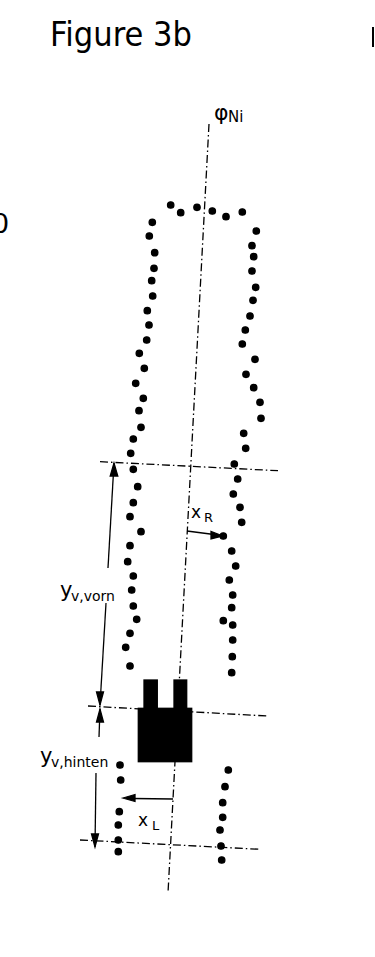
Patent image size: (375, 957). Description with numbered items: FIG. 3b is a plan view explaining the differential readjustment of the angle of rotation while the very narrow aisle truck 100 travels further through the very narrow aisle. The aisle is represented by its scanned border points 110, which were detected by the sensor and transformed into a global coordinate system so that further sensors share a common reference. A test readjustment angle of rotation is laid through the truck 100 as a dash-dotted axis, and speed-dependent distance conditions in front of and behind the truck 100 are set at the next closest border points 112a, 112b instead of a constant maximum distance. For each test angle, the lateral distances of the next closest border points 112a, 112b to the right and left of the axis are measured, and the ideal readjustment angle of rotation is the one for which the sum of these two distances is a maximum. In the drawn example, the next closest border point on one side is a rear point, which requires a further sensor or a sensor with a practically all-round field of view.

The very narrow aisle truck 100 is at (178, 736).
The border points 110 is at (176, 533).
The next closest border point 112a is at (223, 536).
The next closest border point 112b is at (81, 541).